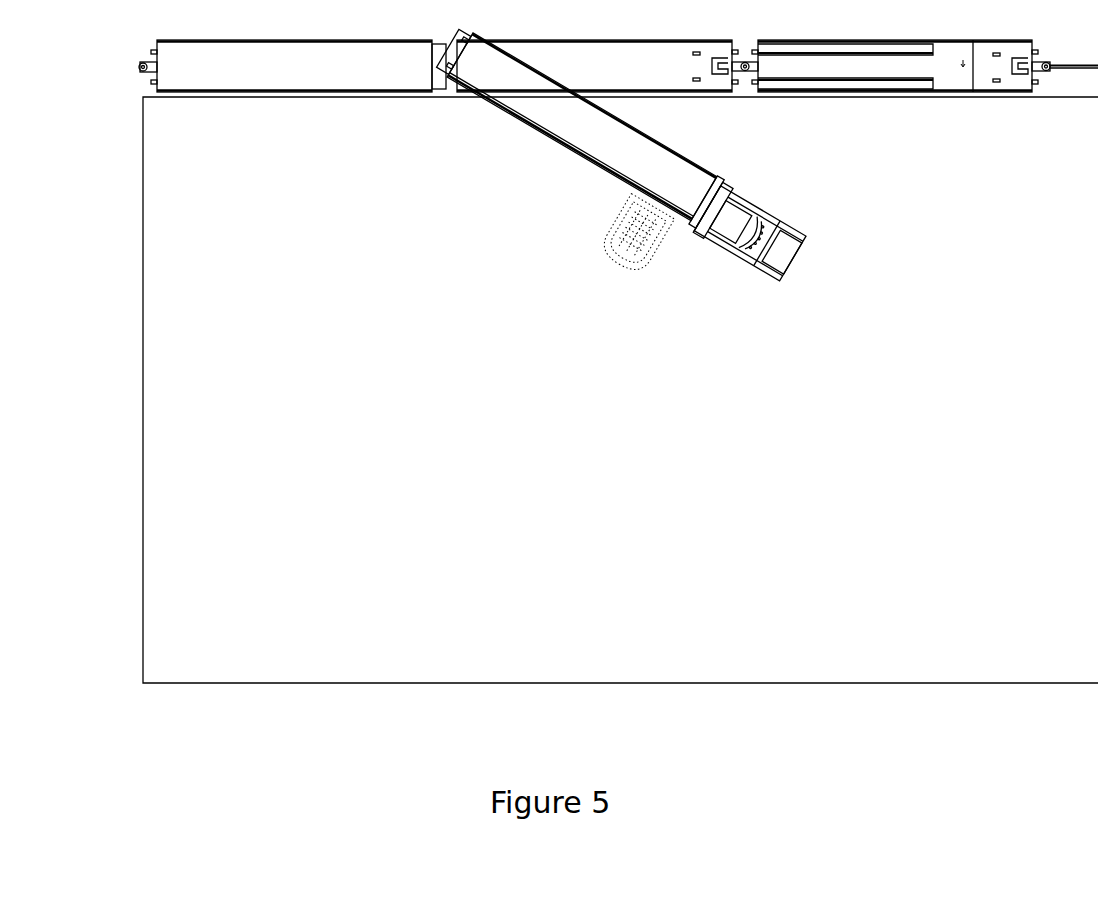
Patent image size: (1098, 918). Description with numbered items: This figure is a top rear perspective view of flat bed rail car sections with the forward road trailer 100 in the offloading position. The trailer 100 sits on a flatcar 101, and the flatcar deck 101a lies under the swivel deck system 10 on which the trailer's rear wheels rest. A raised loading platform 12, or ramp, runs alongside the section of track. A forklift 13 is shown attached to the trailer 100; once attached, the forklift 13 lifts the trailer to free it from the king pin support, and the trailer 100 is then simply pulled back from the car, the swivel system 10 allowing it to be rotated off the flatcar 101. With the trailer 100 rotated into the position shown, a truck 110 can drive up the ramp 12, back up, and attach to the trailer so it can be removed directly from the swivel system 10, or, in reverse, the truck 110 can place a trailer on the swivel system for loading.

The swivel deck system 10 is at (898, 75).
The raised loading platform 12 is at (249, 648).
The forklift 13 is at (607, 242).
The road trailer 100 is at (513, 123).
The flatcar 101 is at (1018, 85).
The flatcar deck 101a is at (660, 73).
The truck 110 is at (723, 247).